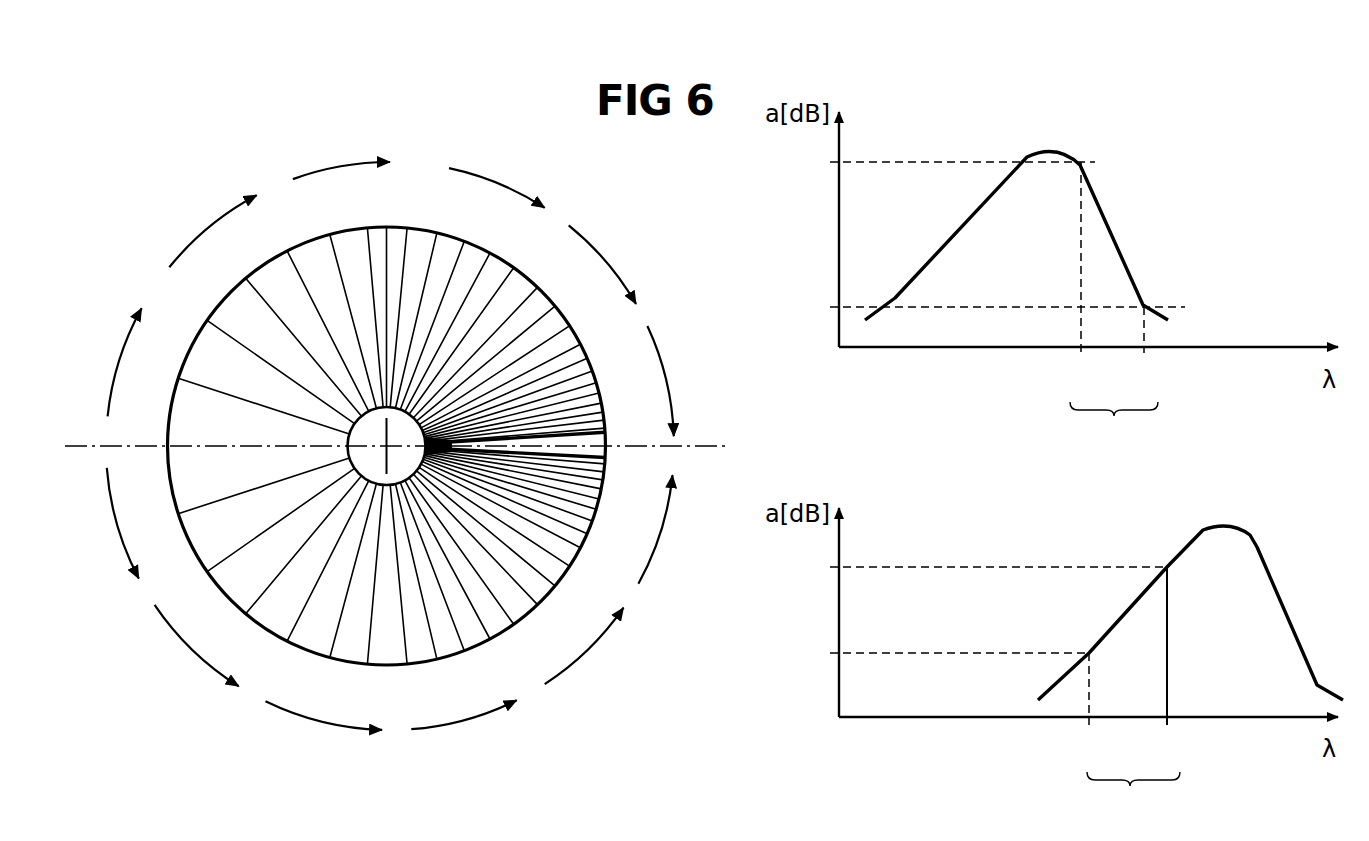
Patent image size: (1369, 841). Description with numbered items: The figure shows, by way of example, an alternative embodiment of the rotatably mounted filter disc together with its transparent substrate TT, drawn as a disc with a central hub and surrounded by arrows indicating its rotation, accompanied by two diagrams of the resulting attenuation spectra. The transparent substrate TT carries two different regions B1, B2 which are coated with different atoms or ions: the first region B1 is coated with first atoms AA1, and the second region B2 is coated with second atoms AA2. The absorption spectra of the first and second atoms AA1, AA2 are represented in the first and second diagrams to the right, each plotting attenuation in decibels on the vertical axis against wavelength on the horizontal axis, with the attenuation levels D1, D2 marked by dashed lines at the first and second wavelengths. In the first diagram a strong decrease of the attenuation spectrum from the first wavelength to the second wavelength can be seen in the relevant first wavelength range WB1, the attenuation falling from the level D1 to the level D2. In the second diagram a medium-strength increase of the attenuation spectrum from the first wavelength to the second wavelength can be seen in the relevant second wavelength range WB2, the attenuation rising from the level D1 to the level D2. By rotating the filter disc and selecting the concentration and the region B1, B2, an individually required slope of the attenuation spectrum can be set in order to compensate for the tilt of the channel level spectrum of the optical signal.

The first atoms AA1 is at (594, 365).
The second atoms AA2 is at (180, 524).
The first region B1 is at (282, 330).
The second region B2 is at (280, 561).
The transparent substrate TT is at (598, 508).
The first attenuation level D1 is at (942, 410).
The second attenuation level D2 is at (987, 439).
The first wavelength range WB1 is at (1114, 427).
The second wavelength range WB2 is at (1133, 795).